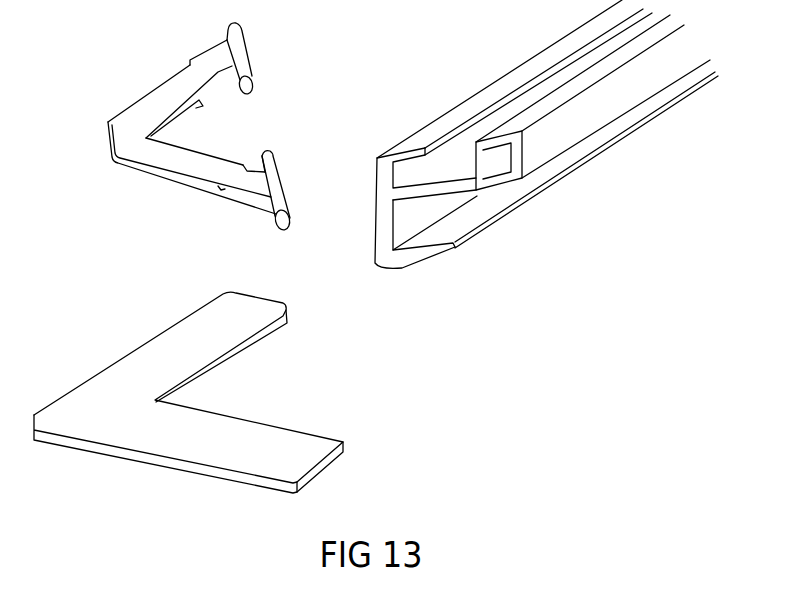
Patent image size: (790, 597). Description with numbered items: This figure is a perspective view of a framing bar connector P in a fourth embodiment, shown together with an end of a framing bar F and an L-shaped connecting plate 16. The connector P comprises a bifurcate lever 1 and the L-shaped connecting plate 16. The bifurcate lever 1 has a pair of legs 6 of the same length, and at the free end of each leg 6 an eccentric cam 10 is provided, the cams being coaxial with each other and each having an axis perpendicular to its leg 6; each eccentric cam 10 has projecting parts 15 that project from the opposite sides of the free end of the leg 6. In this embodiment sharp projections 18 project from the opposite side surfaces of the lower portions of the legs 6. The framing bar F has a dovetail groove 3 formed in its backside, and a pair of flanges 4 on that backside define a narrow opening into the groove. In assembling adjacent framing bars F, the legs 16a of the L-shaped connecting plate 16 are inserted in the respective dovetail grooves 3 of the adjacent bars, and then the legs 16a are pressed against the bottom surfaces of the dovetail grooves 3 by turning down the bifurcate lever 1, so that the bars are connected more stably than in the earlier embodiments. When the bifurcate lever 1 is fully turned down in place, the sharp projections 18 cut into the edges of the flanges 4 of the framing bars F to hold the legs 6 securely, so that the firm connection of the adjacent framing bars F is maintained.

The bifurcate lever 1 is at (140, 102).
The framing bar connector P is at (90, 259).
The legs 6 is at (172, 100).
The sharp projections 18 is at (193, 62).
The eccentric cams 10 is at (242, 53).
The projecting parts 15 is at (288, 229).
The framing bar F is at (483, 91).
The flanges 4 is at (447, 133).
The dovetail groove 3 is at (483, 170).
The L-shaped connecting plate 16 is at (152, 468).
The legs of the L-shaped connecting plate 16a is at (112, 362).